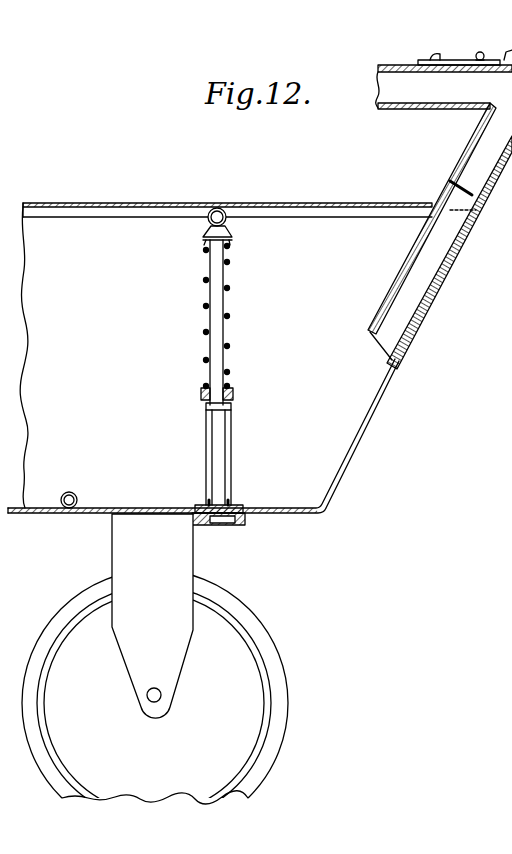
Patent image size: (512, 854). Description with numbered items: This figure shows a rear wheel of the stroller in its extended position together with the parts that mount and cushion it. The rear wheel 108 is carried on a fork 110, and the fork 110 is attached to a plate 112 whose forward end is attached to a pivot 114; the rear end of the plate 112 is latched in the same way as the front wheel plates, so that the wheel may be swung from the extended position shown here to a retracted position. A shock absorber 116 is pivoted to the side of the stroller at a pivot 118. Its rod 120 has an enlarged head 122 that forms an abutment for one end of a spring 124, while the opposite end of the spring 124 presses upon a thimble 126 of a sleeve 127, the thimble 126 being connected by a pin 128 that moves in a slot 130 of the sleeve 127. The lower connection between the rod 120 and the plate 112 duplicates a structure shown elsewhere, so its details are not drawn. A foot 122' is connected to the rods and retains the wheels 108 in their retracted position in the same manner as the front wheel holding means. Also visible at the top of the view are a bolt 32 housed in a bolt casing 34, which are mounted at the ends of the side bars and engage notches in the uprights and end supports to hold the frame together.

The bolt 32 is at (498, 58).
The bolt casing 34 is at (437, 60).
The rear wheel 108 is at (268, 636).
The fork 110 is at (178, 560).
The plate 112 is at (105, 508).
The pivot 114 is at (66, 492).
The shock absorber 116 is at (226, 280).
The pivot of shock absorber 118 is at (207, 224).
The rod 120 is at (226, 250).
The enlarged head 122 is at (187, 251).
The foot 122' is at (239, 501).
The spring 124 is at (206, 308).
The thimble 126 is at (235, 392).
The sleeve 127 is at (218, 443).
The pin 128 is at (228, 406).
The slot 130 is at (207, 448).